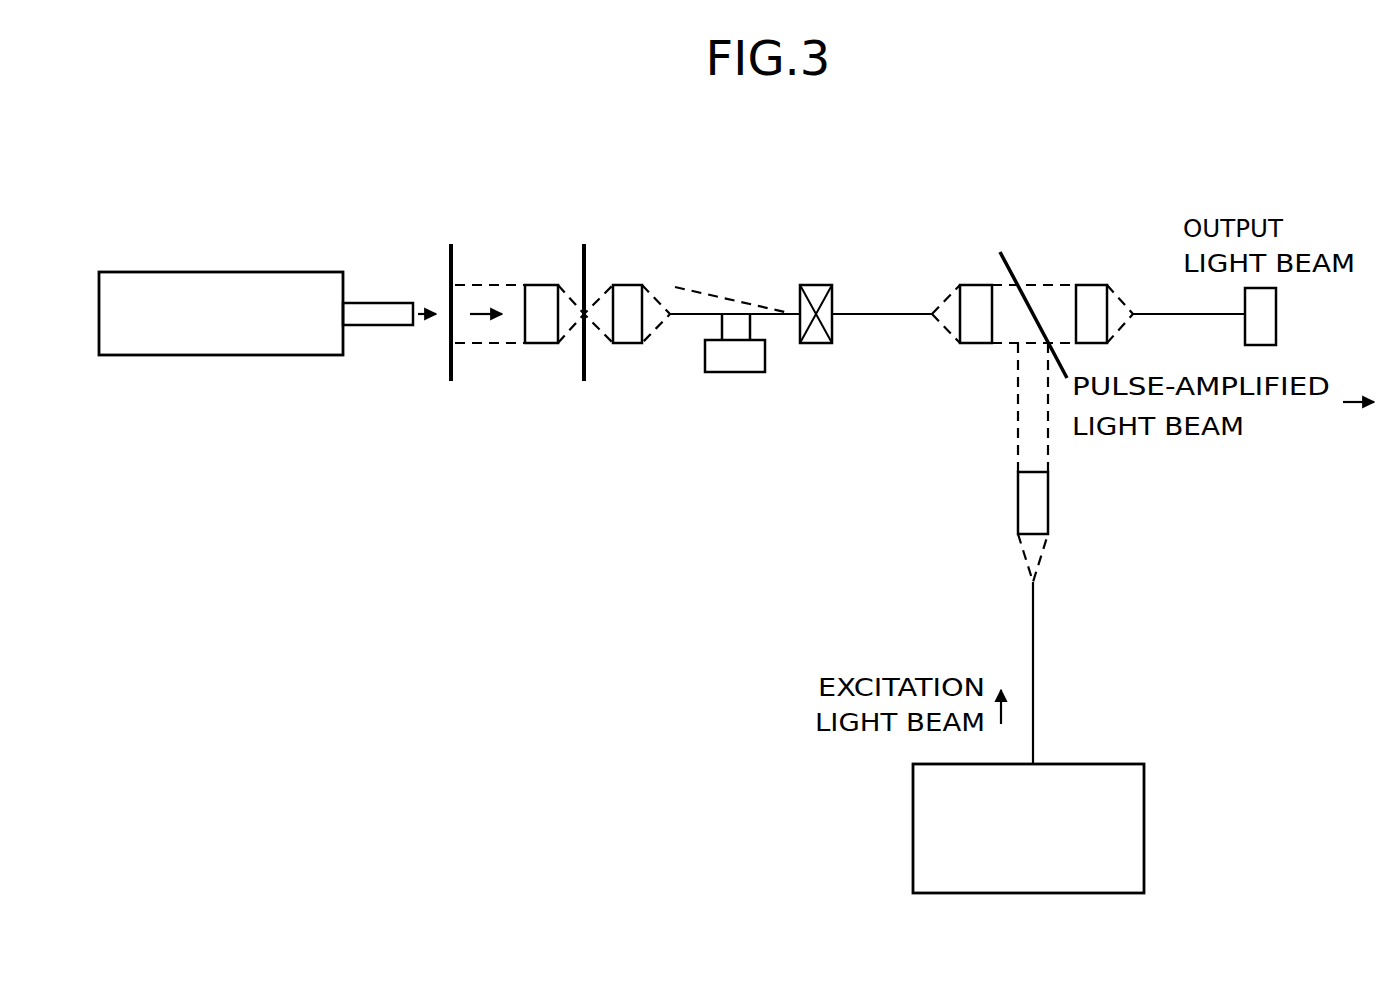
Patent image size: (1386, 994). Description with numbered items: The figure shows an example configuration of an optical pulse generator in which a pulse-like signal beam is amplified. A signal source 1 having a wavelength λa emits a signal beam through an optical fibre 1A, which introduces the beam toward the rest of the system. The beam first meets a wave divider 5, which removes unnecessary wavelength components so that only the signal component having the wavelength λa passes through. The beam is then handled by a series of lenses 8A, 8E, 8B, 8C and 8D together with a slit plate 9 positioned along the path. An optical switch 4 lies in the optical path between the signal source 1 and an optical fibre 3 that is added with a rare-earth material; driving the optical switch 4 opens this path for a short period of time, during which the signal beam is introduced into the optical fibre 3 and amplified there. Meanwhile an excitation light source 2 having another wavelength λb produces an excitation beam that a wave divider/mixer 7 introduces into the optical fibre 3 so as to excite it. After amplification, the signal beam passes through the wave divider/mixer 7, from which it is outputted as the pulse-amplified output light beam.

The signal source 1 is at (248, 272).
The optical fibre 1A is at (390, 326).
The excitation light source 2 is at (1078, 764).
The optical fibre 3 is at (887, 316).
The optical switch 4 is at (667, 248).
The wave divider 5 is at (450, 262).
The wave divider/mixer 7 is at (1013, 270).
The lens 8A is at (547, 346).
The lens 8B is at (975, 285).
The lens 8C is at (1090, 285).
The lens 8D is at (1047, 515).
The lens 8E is at (632, 346).
The slit plate 9 is at (584, 262).